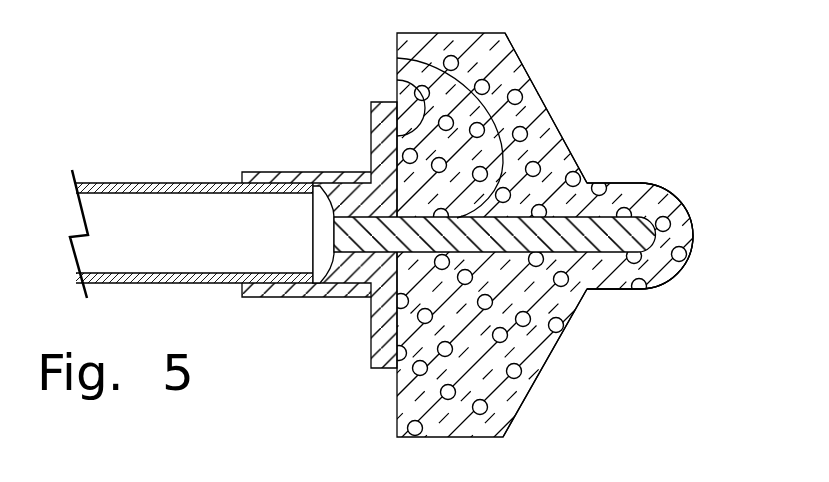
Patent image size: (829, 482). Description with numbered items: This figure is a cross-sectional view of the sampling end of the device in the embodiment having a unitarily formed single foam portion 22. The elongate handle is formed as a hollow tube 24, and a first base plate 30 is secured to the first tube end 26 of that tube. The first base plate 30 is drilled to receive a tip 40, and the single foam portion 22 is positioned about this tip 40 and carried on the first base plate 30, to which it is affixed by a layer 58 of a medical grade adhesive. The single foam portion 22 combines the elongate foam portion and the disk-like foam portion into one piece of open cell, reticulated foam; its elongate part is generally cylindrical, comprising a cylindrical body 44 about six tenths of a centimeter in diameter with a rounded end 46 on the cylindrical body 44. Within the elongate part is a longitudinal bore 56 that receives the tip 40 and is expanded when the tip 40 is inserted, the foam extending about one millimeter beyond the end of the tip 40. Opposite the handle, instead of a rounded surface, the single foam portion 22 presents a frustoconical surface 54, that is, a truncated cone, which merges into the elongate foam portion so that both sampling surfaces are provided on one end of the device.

The single foam portion 22 is at (528, 73).
The hollow tube 24 is at (193, 182).
The first tube end 26 is at (333, 212).
The first base plate 30 is at (370, 308).
The tip 40 is at (641, 183).
The cylindrical body 44 is at (617, 290).
The rounded end 46 is at (688, 247).
The frustoconical surface 54 is at (557, 347).
The longitudinal bore 56 is at (576, 217).
The layer of medical grade adhesive 58 is at (397, 58).